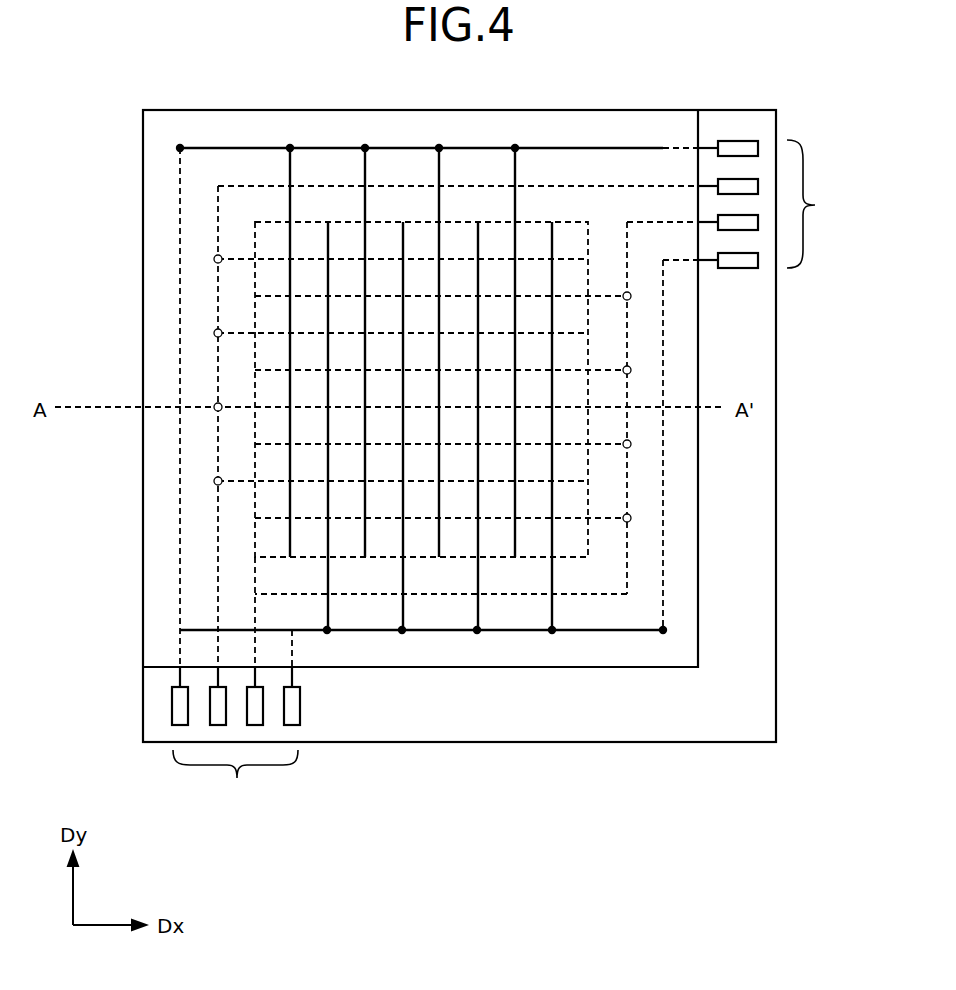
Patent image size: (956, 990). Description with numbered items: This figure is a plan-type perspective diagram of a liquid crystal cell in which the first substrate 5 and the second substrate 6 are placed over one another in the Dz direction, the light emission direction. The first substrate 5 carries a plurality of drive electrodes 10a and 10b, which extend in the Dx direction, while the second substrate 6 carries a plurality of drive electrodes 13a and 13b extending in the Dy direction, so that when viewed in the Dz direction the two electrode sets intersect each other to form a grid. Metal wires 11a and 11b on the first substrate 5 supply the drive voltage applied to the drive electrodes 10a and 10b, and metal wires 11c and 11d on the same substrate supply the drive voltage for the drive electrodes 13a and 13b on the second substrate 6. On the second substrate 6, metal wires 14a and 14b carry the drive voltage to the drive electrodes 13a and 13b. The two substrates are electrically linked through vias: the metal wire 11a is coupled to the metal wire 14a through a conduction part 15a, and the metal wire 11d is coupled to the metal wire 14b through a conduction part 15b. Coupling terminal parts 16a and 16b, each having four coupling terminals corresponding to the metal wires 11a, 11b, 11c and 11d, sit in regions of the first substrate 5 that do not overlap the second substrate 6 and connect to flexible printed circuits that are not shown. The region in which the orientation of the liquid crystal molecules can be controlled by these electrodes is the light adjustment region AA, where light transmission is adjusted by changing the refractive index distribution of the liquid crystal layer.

The first substrate 5 is at (742, 110).
The second substrate 6 is at (250, 110).
The drive electrode 10a is at (413, 259).
The drive electrode 10b is at (500, 296).
The metal wire 11a is at (180, 372).
The metal wire 11b is at (218, 440).
The metal wire 11c is at (627, 507).
The metal wire 11d is at (663, 543).
The drive electrode 13a is at (515, 453).
The drive electrode 13b is at (552, 475).
The metal wire 14a is at (592, 148).
The metal wire 14b is at (595, 632).
The conduction part 15a is at (180, 146).
The conduction part 15b is at (663, 630).
The coupling terminal part 16a is at (236, 738).
The coupling terminal part 16b is at (792, 204).
The light adjustment region AA is at (588, 385).